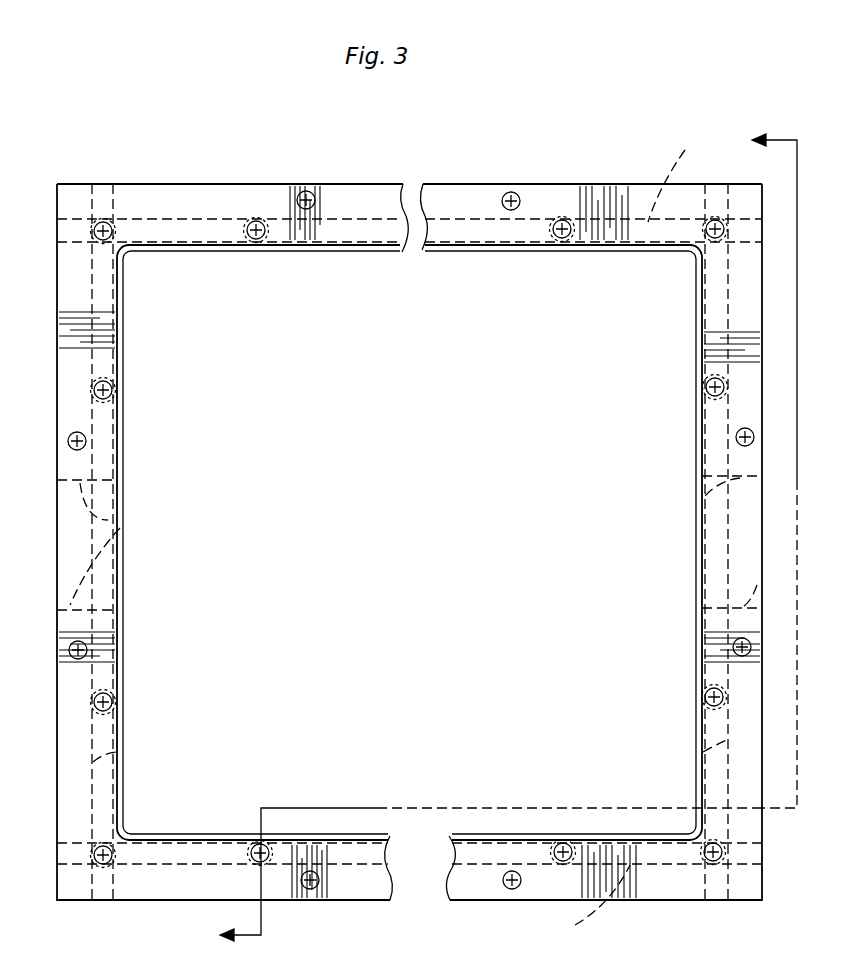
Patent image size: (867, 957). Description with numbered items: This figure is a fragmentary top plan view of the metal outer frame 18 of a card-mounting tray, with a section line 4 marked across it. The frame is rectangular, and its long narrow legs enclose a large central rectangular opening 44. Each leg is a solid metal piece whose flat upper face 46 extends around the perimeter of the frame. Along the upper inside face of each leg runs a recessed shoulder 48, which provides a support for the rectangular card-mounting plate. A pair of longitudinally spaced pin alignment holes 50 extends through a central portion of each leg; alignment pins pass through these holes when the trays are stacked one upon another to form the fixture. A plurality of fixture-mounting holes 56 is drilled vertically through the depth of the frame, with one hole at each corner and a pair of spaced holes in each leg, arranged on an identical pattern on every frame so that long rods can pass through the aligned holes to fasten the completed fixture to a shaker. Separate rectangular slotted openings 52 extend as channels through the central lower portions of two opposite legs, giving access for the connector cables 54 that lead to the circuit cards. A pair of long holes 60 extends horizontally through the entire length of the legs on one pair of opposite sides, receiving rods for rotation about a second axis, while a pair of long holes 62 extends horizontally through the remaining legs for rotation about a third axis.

The outer frame 18 is at (178, 879).
The upper face 46 is at (176, 196).
The recessed shoulder 48 is at (640, 252).
The section line 4- 4 is at (497, 541).
The central rectangular opening 44 is at (664, 566).
The pin alignment holes 50 is at (306, 191).
The connector cables 54 is at (262, 240).
The fixture-mounting holes 56 is at (103, 220).
The slotted openings 52 is at (118, 528).
The long holes 60 is at (118, 752).
The long holes 62 is at (616, 534).